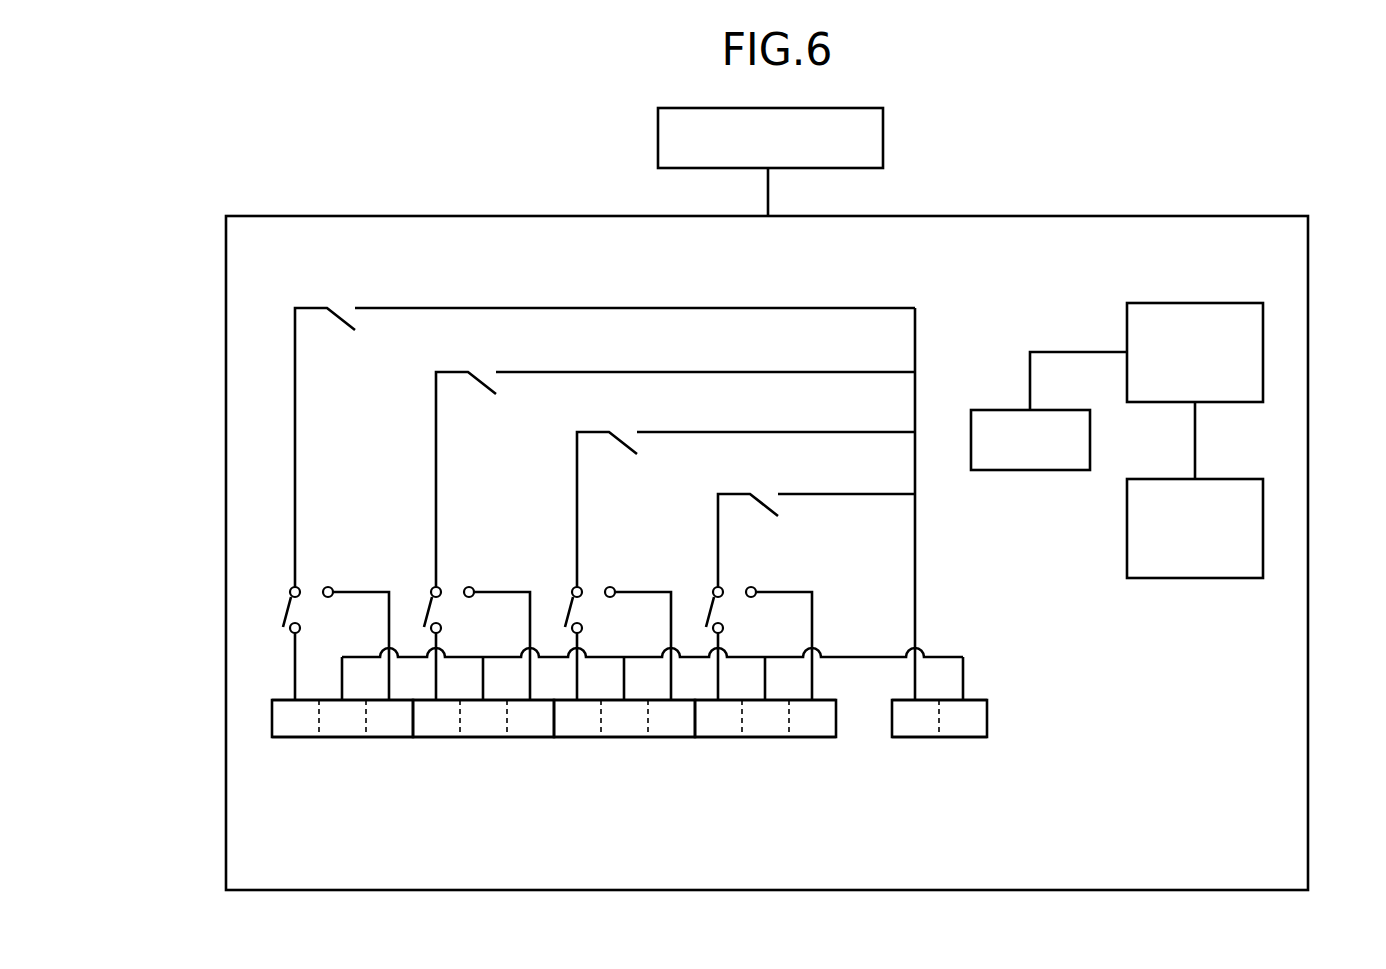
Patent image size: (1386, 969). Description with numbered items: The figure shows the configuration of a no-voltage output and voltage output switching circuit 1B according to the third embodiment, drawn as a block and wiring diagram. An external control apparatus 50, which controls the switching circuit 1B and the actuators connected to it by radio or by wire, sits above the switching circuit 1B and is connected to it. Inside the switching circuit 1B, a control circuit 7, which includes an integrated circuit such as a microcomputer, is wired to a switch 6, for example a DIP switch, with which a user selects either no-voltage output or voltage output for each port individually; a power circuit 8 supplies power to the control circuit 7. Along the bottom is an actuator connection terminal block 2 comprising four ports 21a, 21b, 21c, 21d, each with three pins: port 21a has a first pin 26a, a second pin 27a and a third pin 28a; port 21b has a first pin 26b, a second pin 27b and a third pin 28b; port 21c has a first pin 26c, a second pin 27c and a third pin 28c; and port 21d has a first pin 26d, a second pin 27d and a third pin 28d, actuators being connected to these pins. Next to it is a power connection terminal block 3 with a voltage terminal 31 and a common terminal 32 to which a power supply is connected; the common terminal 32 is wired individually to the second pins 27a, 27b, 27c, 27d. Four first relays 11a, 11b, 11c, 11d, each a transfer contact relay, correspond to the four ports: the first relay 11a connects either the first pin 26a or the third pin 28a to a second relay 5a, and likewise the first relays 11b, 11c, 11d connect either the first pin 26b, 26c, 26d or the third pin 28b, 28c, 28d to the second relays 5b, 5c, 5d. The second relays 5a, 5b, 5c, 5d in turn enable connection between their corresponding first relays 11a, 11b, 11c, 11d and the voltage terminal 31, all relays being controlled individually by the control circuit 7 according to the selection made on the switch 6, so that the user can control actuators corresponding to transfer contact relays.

The external control apparatus 50 is at (841, 109).
The no-voltage output and voltage output switching circuit 1B is at (1268, 217).
The control circuit 7 is at (1228, 304).
The switch 6 is at (1060, 411).
The power circuit 8 is at (1228, 481).
The second relay 5a is at (345, 312).
The second relay 5b is at (486, 376).
The second relay 5c is at (627, 436).
The second relay 5d is at (768, 498).
The first relay 11a is at (310, 612).
The first relay 11b is at (451, 612).
The first relay 11c is at (592, 612).
The first relay 11d is at (733, 612).
The actuator connection terminal block 2 is at (554, 786).
The port 21a is at (342, 766).
The port 21b is at (483, 766).
The port 21c is at (624, 766).
The port 21d is at (765, 766).
The first pin 26a is at (298, 740).
The second pin 27a is at (345, 740).
The third pin 28a is at (389, 745).
The first pin 26b is at (439, 740).
The second pin 27b is at (486, 740).
The third pin 28b is at (530, 745).
The first pin 26c is at (580, 740).
The second pin 27c is at (627, 740).
The third pin 28c is at (671, 745).
The first pin 26d is at (721, 740).
The second pin 27d is at (768, 740).
The third pin 28d is at (812, 745).
The power connection terminal block 3 is at (938, 766).
The voltage terminal 31 is at (918, 740).
The common terminal 32 is at (963, 745).